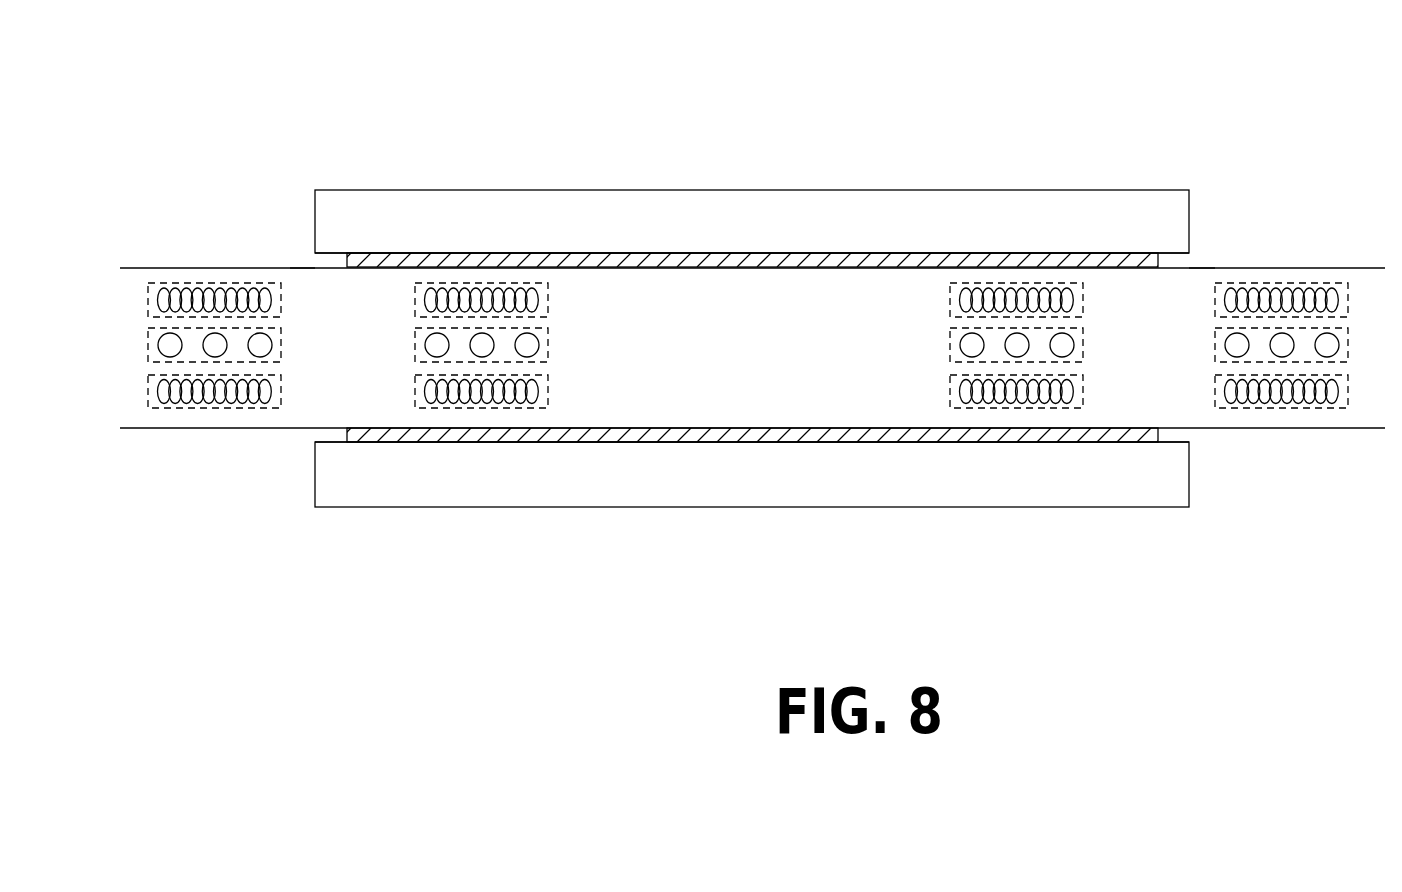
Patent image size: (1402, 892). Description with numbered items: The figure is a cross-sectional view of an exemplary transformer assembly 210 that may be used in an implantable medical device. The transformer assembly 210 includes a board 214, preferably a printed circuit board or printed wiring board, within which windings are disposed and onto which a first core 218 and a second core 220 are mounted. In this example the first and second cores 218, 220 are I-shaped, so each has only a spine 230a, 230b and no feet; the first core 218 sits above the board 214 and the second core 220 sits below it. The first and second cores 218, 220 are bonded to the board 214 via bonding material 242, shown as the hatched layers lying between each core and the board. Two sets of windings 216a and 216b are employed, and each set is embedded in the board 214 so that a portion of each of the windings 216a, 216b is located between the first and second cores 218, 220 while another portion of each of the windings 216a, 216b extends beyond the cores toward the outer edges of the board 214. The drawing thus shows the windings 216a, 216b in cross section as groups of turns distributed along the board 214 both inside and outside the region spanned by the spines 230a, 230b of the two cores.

The transformer assembly 210 is at (735, 310).
The board 214 is at (128, 297).
The windings 216a is at (302, 290).
The windings 216b is at (1199, 272).
The first core 218 is at (468, 207).
The second core 220 is at (472, 482).
The spine 230a is at (662, 232).
The spine 230b is at (702, 488).
The bonding material 242 is at (573, 443).